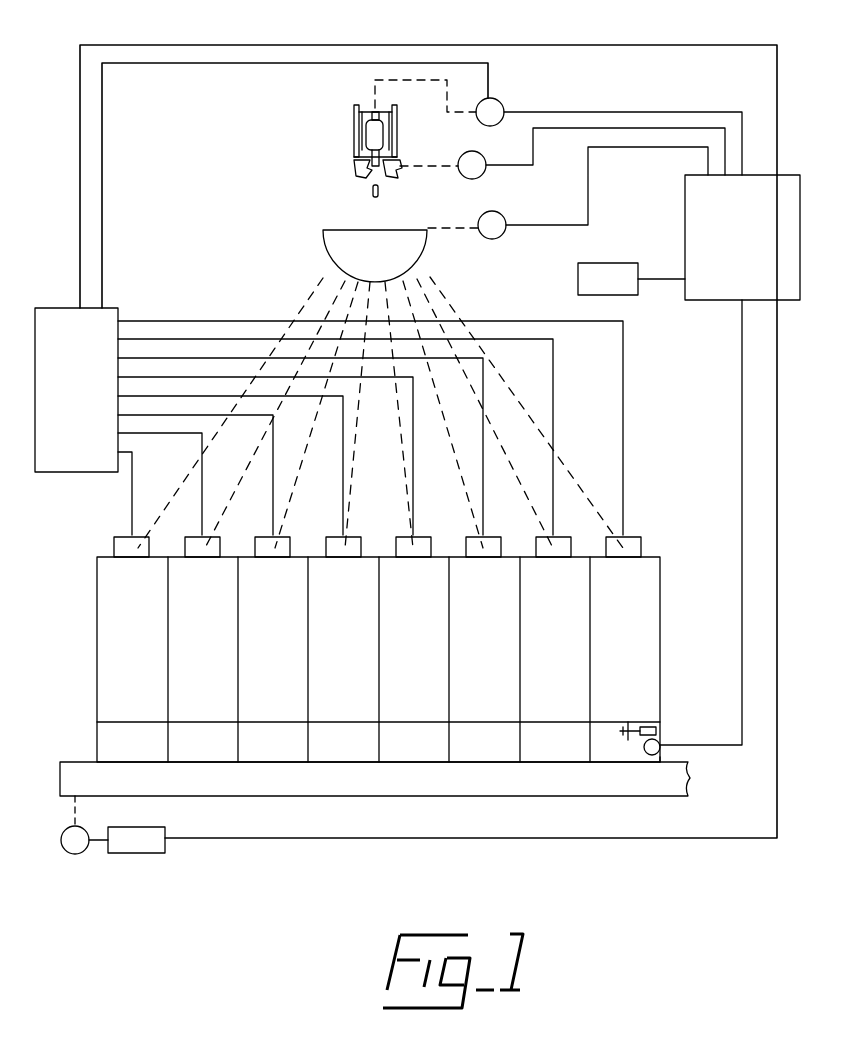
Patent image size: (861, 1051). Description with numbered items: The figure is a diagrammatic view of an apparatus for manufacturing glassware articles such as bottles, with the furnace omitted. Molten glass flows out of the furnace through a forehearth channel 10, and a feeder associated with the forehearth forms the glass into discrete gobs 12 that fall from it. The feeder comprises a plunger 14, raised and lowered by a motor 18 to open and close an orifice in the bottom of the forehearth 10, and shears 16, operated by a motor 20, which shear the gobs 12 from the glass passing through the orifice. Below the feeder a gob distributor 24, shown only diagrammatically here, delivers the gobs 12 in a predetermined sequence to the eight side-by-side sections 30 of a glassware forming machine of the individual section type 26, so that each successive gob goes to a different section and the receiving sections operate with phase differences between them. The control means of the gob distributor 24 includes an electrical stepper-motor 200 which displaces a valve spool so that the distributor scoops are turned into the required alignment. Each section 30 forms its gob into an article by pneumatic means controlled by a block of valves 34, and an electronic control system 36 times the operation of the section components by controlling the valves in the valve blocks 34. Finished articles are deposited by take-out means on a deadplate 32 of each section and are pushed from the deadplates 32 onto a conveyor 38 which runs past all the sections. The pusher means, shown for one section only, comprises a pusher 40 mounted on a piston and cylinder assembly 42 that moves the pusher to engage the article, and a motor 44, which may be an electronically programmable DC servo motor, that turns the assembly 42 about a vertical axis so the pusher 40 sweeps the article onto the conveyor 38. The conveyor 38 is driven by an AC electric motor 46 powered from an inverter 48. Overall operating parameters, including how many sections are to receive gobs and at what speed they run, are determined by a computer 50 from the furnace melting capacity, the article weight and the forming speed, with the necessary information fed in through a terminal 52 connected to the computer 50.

The forehearth channel 10 is at (356, 133).
The gobs 12 is at (370, 190).
The plunger 14 is at (374, 118).
The shears 16 is at (392, 170).
The motor 18 is at (500, 104).
The motor 20 is at (486, 172).
The electrical stepper-motor 200 is at (500, 240).
The gob distributor 24 is at (384, 265).
The glassware forming machine of the individual section type 26 is at (88, 540).
The sections 30 is at (354, 650).
The deadplate 32 is at (213, 737).
The block of valves 34 is at (140, 563).
The electronic control system 36 is at (90, 405).
The conveyor 38 is at (475, 782).
The pusher 40 is at (628, 725).
The piston and cylinder assembly 42 is at (645, 727).
The motor 44 is at (660, 757).
The AC electric motor 46 is at (78, 854).
The inverter 48 is at (165, 851).
The computer 50 is at (754, 256).
The terminal 52 is at (606, 270).